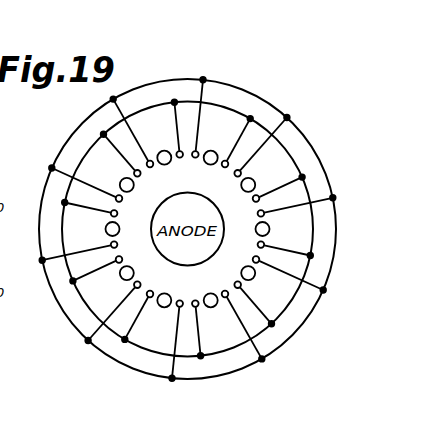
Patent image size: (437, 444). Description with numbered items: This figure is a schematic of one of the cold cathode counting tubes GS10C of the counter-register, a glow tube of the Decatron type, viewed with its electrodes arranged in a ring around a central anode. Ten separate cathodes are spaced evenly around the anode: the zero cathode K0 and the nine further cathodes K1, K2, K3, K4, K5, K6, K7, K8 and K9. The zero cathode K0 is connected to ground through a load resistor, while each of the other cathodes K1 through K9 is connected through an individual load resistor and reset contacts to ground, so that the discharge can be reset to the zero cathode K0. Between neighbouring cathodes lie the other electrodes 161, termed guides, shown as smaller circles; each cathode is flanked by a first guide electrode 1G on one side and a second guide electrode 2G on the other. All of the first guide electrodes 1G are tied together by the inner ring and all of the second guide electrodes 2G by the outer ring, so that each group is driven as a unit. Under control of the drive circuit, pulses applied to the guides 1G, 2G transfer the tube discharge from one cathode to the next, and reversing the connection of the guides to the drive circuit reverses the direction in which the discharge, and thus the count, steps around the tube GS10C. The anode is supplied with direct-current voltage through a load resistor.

The cold cathode counting tube GS10C is at (188, 72).
The zero cathode K0 is at (270, 229).
The cathode K1 is at (254, 278).
The cathode K2 is at (213, 308).
The cathode K3 is at (162, 308).
The cathode K4 is at (121, 278).
The cathode K5 is at (105, 229).
The cathode K6 is at (121, 180).
The cathode K7 is at (162, 150).
The cathode K8 is at (213, 150).
The cathode K9 is at (254, 180).
The second guide electrodes 2G is at (333, 198).
The first guide electrodes 1G is at (310, 256).
The guide electrode 161 is at (118, 212).